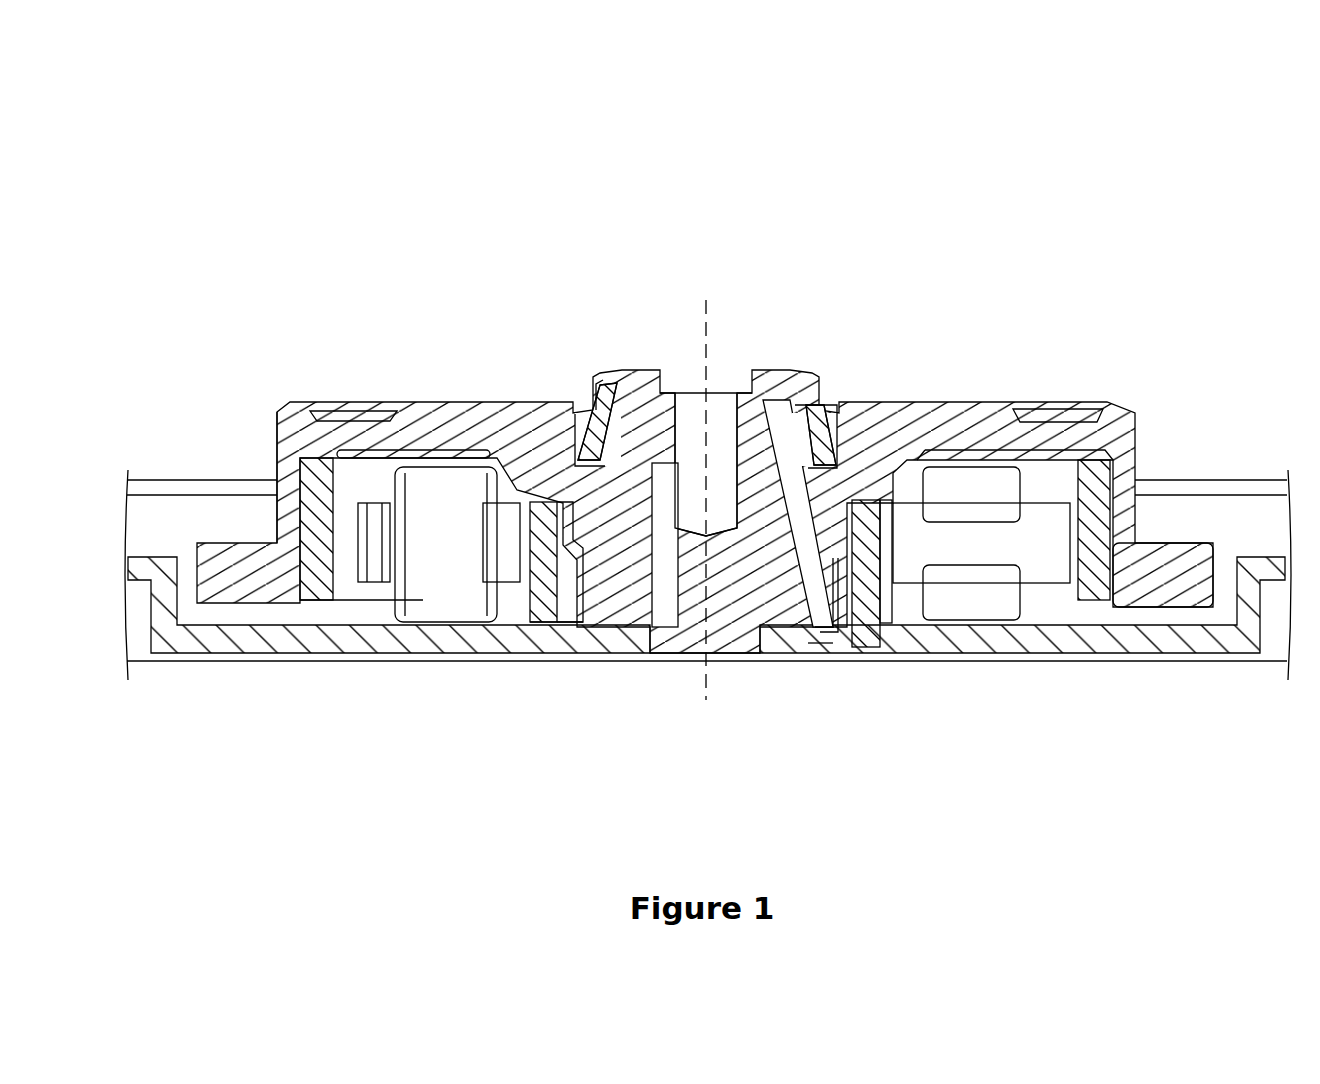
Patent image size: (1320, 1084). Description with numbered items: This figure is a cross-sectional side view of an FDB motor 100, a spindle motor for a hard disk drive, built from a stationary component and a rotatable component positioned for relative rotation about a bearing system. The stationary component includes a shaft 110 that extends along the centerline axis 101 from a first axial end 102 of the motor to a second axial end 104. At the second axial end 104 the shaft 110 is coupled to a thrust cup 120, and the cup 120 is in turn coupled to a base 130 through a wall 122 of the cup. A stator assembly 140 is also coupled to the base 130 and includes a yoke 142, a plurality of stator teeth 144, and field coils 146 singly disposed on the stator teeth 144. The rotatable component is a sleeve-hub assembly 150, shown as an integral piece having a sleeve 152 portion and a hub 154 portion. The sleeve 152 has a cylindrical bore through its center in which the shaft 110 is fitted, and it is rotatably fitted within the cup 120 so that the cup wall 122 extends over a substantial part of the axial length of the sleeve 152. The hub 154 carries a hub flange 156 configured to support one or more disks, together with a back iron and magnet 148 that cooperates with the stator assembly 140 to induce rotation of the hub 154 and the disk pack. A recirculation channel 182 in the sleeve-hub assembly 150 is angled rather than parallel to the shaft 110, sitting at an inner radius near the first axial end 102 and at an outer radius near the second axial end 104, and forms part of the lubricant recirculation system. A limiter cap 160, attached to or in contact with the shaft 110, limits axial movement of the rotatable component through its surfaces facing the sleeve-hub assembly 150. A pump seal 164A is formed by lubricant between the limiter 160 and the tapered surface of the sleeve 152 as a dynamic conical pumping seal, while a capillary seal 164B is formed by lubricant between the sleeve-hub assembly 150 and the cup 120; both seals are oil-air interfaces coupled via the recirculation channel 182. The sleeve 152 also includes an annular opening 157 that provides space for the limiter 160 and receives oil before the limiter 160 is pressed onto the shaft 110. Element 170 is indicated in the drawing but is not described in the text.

The FDB motor 100 is at (560, 108).
The centerline axis 101 is at (703, 345).
The first axial end 102 is at (726, 340).
The second axial end 104 is at (722, 705).
The shaft 110 is at (709, 645).
The cup 120 is at (808, 643).
The wall 122 is at (558, 632).
The base 130 is at (1098, 636).
The stator assembly 140 is at (1025, 477).
The yoke 142 is at (495, 523).
The stator teeth 144 is at (947, 560).
The field coils 146 is at (421, 557).
The back iron and magnet 148 is at (335, 502).
The sleeve-hub assembly 150 is at (515, 437).
The sleeve 152 is at (587, 620).
The hub 154 is at (293, 430).
The hub flange 156 is at (1152, 592).
The opening 157 is at (844, 478).
The limiter cap 160 is at (797, 372).
The pump seal 164A is at (813, 420).
The capillary seal 164B is at (805, 512).
The recess 170 is at (965, 456).
The recirculation channel 182 is at (850, 577).